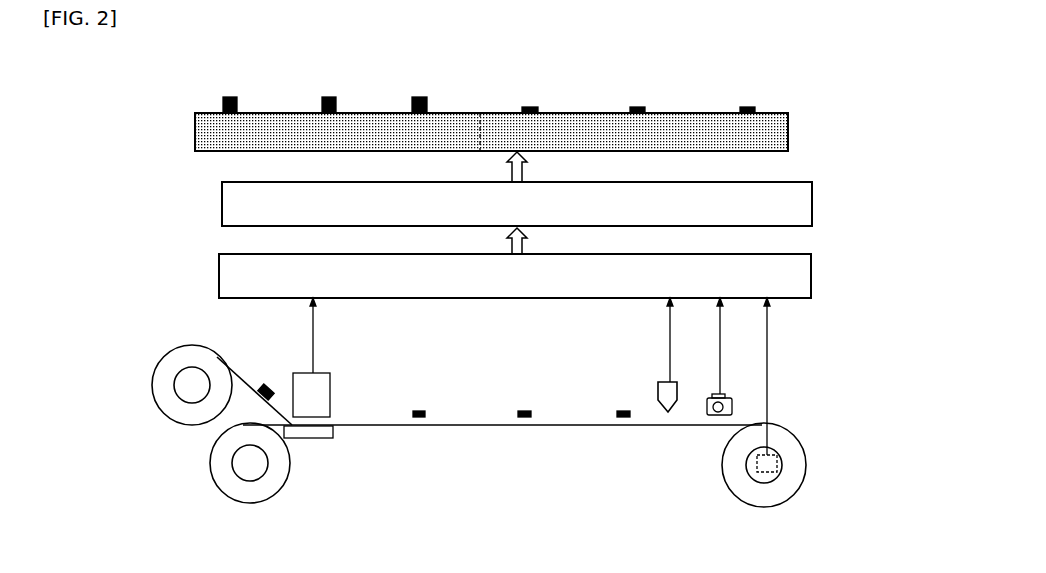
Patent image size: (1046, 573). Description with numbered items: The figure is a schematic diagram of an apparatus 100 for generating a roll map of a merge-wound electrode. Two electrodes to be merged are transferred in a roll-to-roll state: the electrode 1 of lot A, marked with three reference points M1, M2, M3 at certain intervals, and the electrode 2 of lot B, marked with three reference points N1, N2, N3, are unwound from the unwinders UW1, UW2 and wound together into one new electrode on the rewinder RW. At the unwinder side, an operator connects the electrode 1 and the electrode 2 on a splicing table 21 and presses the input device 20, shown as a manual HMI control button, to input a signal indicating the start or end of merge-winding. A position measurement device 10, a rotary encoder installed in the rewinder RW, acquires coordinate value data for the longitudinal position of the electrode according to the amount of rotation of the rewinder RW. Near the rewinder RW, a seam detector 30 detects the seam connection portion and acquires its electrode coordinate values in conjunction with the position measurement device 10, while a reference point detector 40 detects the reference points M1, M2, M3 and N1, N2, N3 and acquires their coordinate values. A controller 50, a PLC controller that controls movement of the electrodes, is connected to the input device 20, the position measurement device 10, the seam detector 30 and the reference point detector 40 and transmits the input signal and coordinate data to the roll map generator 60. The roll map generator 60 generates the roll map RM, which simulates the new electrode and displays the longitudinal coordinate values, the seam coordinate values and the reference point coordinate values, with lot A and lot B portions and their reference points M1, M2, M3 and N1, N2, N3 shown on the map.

The apparatus for generating a roll map 100 is at (960, 142).
The roll map RM is at (789, 128).
The roll map generator 60 is at (800, 205).
The controller 50 is at (803, 278).
The input device 20 is at (320, 378).
The splicing table 21 is at (310, 432).
The reference point detector 40 is at (661, 388).
The seam detector 30 is at (711, 400).
The position measurement device 10 is at (758, 470).
The electrode to be merged 1 is at (563, 428).
The electrode to be merged 2 is at (241, 372).
The unwinder UW1 is at (228, 472).
The unwinder UW2 is at (186, 359).
The rewinder RW is at (796, 466).
The reference point N1 is at (344, 236).
The reference point N2 is at (329, 94).
The reference point N3 is at (229, 94).
The reference point M1 is at (618, 409).
The reference point M2 is at (519, 409).
The reference point M3 is at (413, 409).